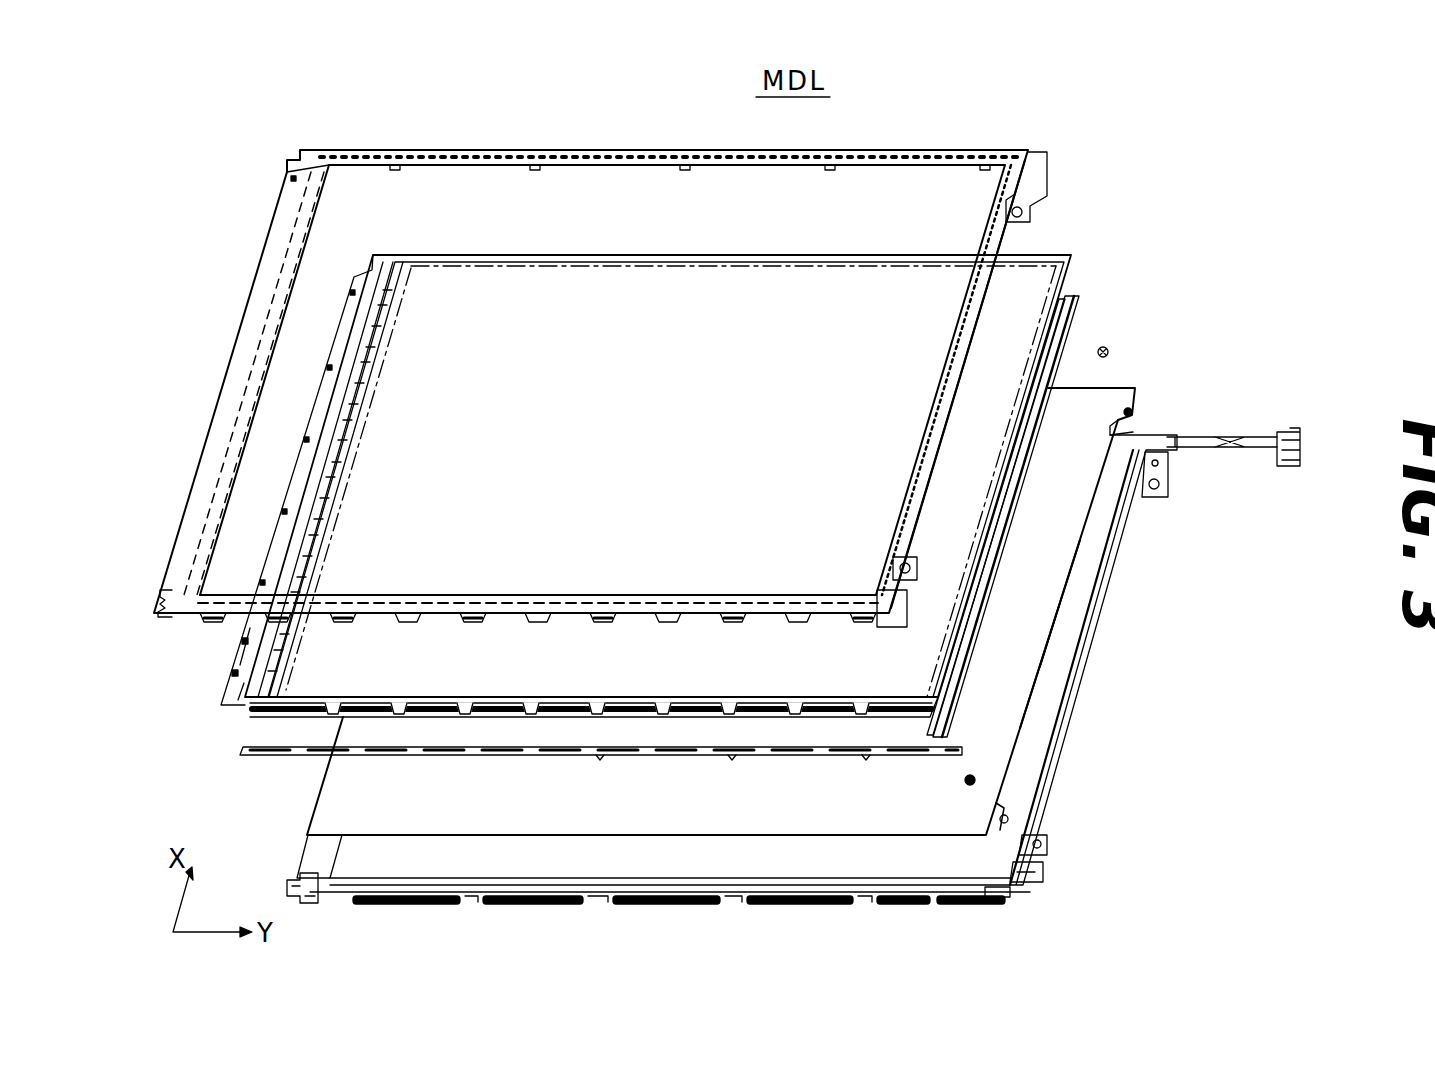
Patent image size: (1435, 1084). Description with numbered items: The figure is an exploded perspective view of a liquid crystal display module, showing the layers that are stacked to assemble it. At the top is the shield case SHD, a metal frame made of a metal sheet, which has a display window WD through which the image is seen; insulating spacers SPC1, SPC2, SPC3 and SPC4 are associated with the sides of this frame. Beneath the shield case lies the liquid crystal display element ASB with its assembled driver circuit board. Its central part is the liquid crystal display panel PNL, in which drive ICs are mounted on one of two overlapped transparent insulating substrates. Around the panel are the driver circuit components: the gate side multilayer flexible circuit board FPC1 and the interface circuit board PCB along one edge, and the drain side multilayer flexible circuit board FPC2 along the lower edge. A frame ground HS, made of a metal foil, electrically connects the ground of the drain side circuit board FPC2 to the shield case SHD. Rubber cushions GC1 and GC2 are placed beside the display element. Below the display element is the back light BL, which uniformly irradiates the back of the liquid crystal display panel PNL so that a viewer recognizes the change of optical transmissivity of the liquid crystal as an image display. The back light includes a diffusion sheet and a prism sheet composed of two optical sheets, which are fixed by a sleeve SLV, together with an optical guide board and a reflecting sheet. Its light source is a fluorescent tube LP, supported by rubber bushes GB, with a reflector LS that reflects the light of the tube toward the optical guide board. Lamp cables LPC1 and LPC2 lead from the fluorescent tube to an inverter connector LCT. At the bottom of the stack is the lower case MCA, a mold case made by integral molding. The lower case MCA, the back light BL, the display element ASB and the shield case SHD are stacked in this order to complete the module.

The shield case SHD is at (679, 356).
The display window WD is at (318, 221).
The insulating spacer SPC1 is at (280, 260).
The insulating spacer SPC2 is at (513, 595).
The insulating spacer SPC3 is at (934, 413).
The insulating spacer SPC4 is at (588, 150).
The liquid crystal display element PNL is at (712, 282).
The liquid display element with an assembled driver circuit board ASB is at (670, 478).
The interface circuit board PCB is at (252, 685).
The multilayer flexible circuit board FPC1 is at (240, 638).
The multilayer flexible circuit board FPC2 is at (290, 717).
The rubber cushion GC1 is at (1076, 313).
The rubber cushion GC2 is at (1062, 297).
The sleeve SLV is at (1110, 352).
The back light BL is at (1043, 733).
The lower case MCA is at (1118, 636).
The frame ground HS is at (295, 760).
The reflector LS is at (833, 890).
The fluorescent tube LP is at (1000, 893).
The rubber bush GB is at (317, 880).
The lamp cable LPC1 is at (1253, 440).
The lamp cable LPC2 is at (1203, 450).
The inverter connector LCT is at (1287, 470).